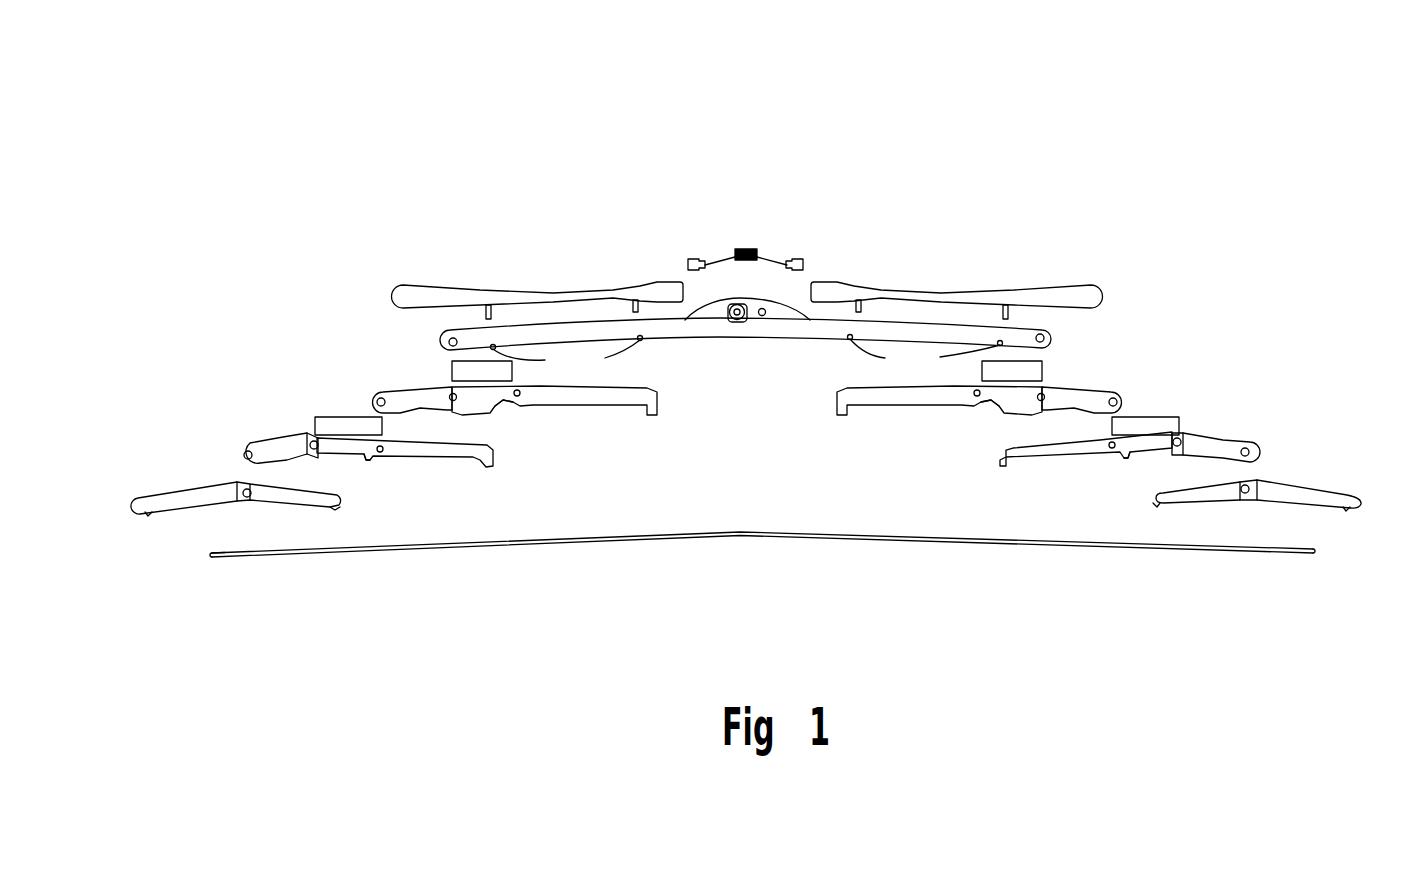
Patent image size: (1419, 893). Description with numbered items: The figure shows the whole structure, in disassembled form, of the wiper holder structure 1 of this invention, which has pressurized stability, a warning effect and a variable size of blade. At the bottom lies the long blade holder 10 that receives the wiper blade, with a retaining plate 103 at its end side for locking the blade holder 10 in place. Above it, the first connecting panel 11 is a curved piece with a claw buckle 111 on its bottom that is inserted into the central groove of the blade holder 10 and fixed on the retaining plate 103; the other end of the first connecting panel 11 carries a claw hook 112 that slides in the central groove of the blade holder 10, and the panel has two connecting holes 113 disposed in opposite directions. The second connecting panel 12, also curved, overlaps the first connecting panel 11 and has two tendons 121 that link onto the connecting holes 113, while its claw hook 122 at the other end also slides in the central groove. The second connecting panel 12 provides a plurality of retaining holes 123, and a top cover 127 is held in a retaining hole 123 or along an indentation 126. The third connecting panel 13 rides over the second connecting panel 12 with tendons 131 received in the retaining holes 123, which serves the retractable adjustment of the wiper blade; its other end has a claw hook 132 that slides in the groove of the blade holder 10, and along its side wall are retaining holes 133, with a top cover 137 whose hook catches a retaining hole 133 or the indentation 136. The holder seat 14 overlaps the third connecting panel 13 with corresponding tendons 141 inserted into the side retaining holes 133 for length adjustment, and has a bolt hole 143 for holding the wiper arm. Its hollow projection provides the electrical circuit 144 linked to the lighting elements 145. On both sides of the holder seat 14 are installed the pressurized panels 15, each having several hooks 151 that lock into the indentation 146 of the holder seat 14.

The wiper holder structure 1 is at (495, 168).
The blade holder 10 is at (650, 536).
The retaining plate 103 is at (216, 558).
The first connecting panel 11 is at (138, 500).
The claw buckle 111 is at (148, 514).
The claw hook 112 is at (337, 505).
The connecting holes 113 is at (251, 496).
The second connecting panel 12 is at (267, 450).
The tendons 121 is at (243, 450).
The claw hook 122 is at (493, 458).
The retaining holes 123 is at (313, 441).
The indentation 126 is at (316, 450).
The top cover 127 is at (323, 414).
The third connecting panel 13 is at (390, 413).
The tendons 131 is at (385, 402).
The claw hook 132 is at (656, 407).
The retaining holes 133 is at (449, 392).
The indentation 136 is at (500, 403).
The top cover 137 is at (449, 385).
The holder seat 14 is at (692, 328).
The tendons 141 is at (449, 388).
The bolt hole 143 is at (742, 320).
The electrical circuit 144 is at (747, 250).
The lighting elements 145 is at (690, 259).
The indentation 146 is at (747, 363).
The pressurized panels 15 is at (553, 297).
The hooks 151 is at (487, 310).